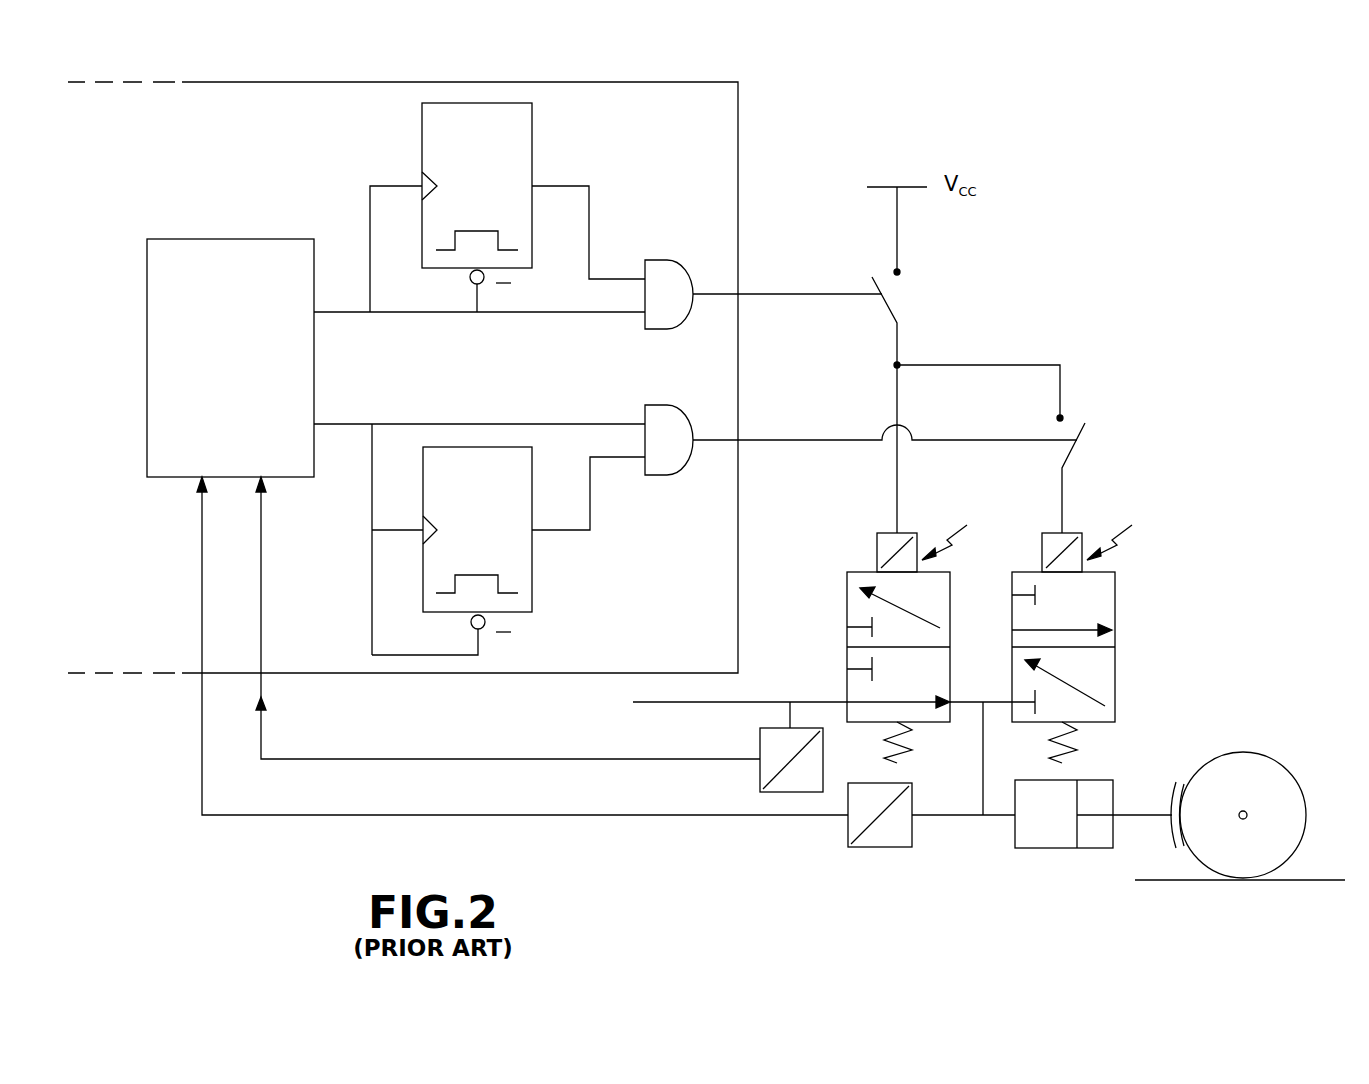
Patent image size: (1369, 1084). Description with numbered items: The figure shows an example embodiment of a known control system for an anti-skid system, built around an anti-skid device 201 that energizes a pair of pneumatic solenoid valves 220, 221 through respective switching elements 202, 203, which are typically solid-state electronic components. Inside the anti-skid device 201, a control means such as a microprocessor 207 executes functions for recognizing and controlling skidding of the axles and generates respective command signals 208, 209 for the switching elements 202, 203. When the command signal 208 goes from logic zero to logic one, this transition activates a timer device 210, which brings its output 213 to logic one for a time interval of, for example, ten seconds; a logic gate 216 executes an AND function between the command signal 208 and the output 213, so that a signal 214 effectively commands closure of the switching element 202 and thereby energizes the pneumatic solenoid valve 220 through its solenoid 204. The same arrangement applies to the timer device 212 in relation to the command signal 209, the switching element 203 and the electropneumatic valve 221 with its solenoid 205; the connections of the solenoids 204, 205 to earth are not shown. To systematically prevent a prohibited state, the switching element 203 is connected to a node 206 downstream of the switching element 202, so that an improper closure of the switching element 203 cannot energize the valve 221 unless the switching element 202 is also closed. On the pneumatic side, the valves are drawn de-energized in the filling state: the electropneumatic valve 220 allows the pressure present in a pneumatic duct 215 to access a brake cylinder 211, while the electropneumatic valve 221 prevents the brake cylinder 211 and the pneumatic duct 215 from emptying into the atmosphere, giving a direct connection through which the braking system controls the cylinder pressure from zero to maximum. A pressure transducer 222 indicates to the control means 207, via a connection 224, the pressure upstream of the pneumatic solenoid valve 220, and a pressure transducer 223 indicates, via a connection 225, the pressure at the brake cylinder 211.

The anti-skid device 201 is at (743, 117).
The switching element 202 is at (888, 303).
The switching element 203 is at (1088, 436).
The solenoid 204 is at (877, 548).
The solenoid 205 is at (1042, 548).
The node 206 is at (895, 366).
The microprocessor 207 is at (160, 240).
The command signal 208 is at (345, 315).
The command signal 209 is at (345, 423).
The timer device 210 is at (422, 129).
The brake cylinder 211 is at (1030, 848).
The timer device 212 is at (532, 560).
The output 213 is at (590, 217).
The signal 214 is at (782, 292).
The pneumatic duct 215 is at (653, 705).
The logic gate 216 is at (667, 265).
The pneumatic solenoid valve 220 is at (847, 607).
The pneumatic solenoid valve 221 is at (1115, 603).
The pressure transducer 222 is at (765, 795).
The pressure transducer 223 is at (855, 850).
The connection 224 is at (260, 470).
The connection 225 is at (200, 472).